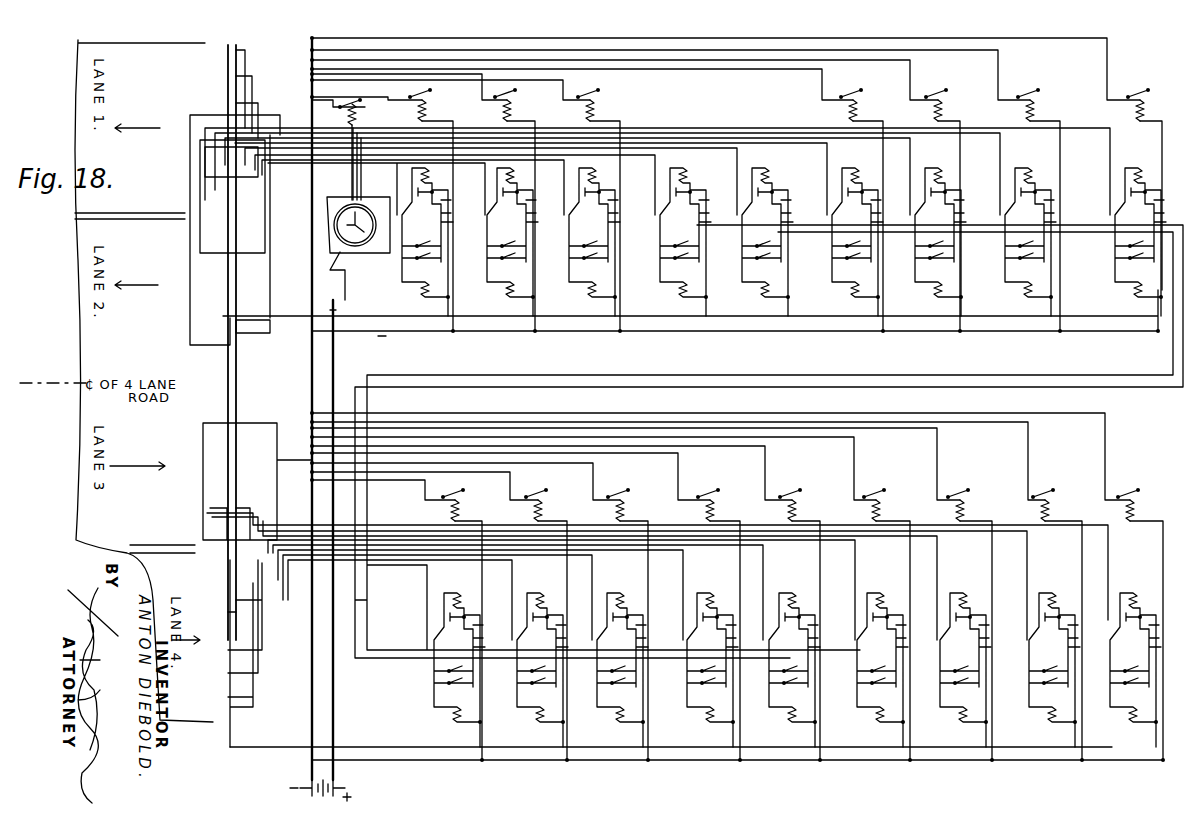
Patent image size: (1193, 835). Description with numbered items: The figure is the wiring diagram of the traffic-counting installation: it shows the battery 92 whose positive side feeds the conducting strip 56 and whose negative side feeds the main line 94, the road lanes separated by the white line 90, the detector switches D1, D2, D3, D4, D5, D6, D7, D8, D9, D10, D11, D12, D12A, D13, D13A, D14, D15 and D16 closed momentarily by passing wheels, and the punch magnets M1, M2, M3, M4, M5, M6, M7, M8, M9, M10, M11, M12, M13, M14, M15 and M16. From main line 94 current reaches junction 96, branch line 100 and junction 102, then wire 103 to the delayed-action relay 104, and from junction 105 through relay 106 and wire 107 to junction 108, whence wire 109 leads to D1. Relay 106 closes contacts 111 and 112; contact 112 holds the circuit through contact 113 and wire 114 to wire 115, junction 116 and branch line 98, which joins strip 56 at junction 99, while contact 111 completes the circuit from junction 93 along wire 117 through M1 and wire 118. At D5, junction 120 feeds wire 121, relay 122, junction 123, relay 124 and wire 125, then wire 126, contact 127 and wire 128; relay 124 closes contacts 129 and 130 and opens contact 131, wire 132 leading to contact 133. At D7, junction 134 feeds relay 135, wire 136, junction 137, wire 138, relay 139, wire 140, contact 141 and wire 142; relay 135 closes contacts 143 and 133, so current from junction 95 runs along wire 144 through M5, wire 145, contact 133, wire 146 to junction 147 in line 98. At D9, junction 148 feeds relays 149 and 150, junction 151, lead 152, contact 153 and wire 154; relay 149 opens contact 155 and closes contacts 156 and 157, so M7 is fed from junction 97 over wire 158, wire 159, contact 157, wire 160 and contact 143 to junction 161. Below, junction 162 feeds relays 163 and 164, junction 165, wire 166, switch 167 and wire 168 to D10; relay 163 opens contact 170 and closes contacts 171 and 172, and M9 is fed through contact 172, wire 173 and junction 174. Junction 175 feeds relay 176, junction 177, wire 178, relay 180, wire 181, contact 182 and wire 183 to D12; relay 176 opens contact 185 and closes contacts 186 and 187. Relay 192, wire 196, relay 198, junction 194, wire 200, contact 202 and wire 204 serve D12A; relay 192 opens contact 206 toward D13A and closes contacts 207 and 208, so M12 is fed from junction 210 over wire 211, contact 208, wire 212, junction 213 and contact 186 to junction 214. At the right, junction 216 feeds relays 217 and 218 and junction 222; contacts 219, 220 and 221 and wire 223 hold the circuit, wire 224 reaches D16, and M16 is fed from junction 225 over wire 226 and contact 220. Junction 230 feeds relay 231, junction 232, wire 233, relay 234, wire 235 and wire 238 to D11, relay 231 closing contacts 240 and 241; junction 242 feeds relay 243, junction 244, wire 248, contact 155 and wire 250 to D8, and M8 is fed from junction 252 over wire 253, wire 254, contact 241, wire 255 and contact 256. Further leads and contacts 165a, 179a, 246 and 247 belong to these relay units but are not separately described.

The conductor 97 is at (312, 43).
The conductor 95 is at (312, 62).
The conductor 93 is at (312, 97).
The conductor 117 is at (392, 116).
The conductor 144 is at (912, 60).
The conductor 158 is at (1107, 55).
The relay M1 is at (430, 209).
The relay M2 is at (423, 202).
The relay M3 is at (466, 205).
The relay M4 is at (861, 209).
The relay M5 is at (948, 209).
The relay M6 is at (1038, 209).
The relay M7 is at (1147, 189).
The relay M8 is at (440, 616).
The relay M9 is at (397, 620).
The relay M10 is at (484, 611).
The relay M11 is at (526, 606).
The relay M12 is at (569, 603).
The relay M13 is at (611, 598).
The relay M14 is at (656, 594).
The relay M15 is at (697, 591).
The relay M16 is at (739, 586).
The conductor 226 is at (640, 413).
The conductor 253 is at (515, 478).
The relay coil 104 is at (470, 233).
The conductor 128 is at (655, 260).
The relay 125 is at (730, 212).
The relay coil 122 is at (769, 168).
The conductor 140 is at (883, 200).
The relay coil 139 is at (940, 168).
The relay coil 247 is at (1030, 168).
The relay coil 150 is at (1140, 168).
The relay coil 164 is at (460, 593).
The relay coil 234 is at (548, 606).
The relay coil 180 is at (630, 593).
The relay 178 is at (680, 600).
The relay coil 198 is at (795, 593).
The relay 196 is at (813, 617).
The conductor 204 is at (860, 577).
The relay coil 218 is at (1140, 583).
The detector D1 is at (251, 48).
The detector D2 is at (258, 75).
The detector D3 is at (261, 104).
The detector D4 is at (206, 190).
The detector D5 is at (248, 188).
The detector D6 is at (206, 240).
The detector D7 is at (248, 240).
The detector D8 is at (205, 333).
The detector D9 is at (251, 345).
The detector D10 is at (262, 408).
The detector D11 is at (208, 410).
The detector D12 is at (254, 490).
The detector D13 is at (210, 494).
The detector D12A is at (262, 605).
The detector D13A is at (202, 604).
The detector D14 is at (208, 655).
The detector D15 is at (208, 678).
The detector D16 is at (208, 700).
The conductor 109 is at (296, 122).
The lane line 90 is at (155, 544).
The conductor 142 is at (958, 287).
The conductor 250 is at (1092, 128).
The conductor 154 is at (1000, 135).
The conductor 94 is at (310, 662).
The conductor 99 is at (222, 316).
The conductor 98 is at (674, 340).
The conductor 96 is at (310, 340).
The conductor 225 is at (300, 400).
The conductor 210 is at (292, 435).
The conductor 238 is at (412, 606).
The conductor 168 is at (513, 576).
The conductor 252 is at (300, 499).
The conductor 183 is at (680, 572).
The conductor 224 is at (1094, 559).
The control unit 56 is at (340, 711).
The conductor 100 is at (1146, 761).
The battery 92 is at (362, 796).
The contact 113 is at (452, 193).
The contact 118 is at (452, 210).
The contact 114 is at (452, 225).
The contact 107 is at (452, 240).
The armature 108 is at (410, 210).
The contact 111 is at (412, 258).
The contact 112 is at (412, 271).
The contact 115 is at (406, 290).
The contact 116 is at (404, 311).
The conductor 103 is at (452, 270).
The relay coil 106 is at (435, 298).
The conductor 105 is at (456, 304).
The conductor 123 is at (750, 177).
The conductor 121 is at (788, 285).
The contact 129 is at (758, 245).
The contact 132 is at (788, 238).
The contact 130 is at (788, 252).
The contact 131 is at (788, 265).
The relay coil 127 is at (674, 288).
The conductor 126 is at (732, 270).
The relay coil 124 is at (772, 292).
The conductor 102 is at (448, 334).
The conductor 146 is at (734, 328).
The conductor 147 is at (755, 328).
The conductor 120 is at (796, 334).
The contact 143 is at (877, 286).
The relay coil 141 is at (896, 292).
The conductor 137 is at (926, 176).
The conductor 145 is at (962, 152).
The contact 138 is at (958, 176).
The armature 136 is at (920, 211).
The contact 133 is at (956, 219).
The relay coil 135 is at (914, 296).
The conductor 161 is at (919, 334).
The conductor 134 is at (938, 336).
The conductor 153 is at (993, 322).
The conductor 244 is at (1009, 179).
The contact 256 is at (1016, 250).
The contact 160 is at (968, 262).
The relay coil 243 is at (1030, 292).
The conductor 248 is at (1066, 300).
The conductor 246 is at (1038, 334).
The conductor 242 is at (1058, 336).
The conductor 159 is at (1162, 135).
The conductor 179a is at (1118, 172).
The contact 151 is at (1108, 182).
The conductor 152 is at (1100, 198).
The contact 157 is at (1140, 216).
The conductor 174 is at (1162, 220).
The relay coil 156 is at (1096, 285).
The contact 155 is at (1126, 298).
The conductor 149 is at (1141, 312).
The conductor 148 is at (1160, 322).
The conductor 173 is at (370, 585).
The conductor 255 is at (408, 654).
The contact 165 is at (424, 622).
The contact 165a is at (469, 604).
The conductor 166 is at (490, 630).
The conductor 232 is at (520, 604).
The conductor 254 is at (560, 605).
The contact 177 is at (615, 626).
The conductor 213 is at (613, 645).
The contact 187 is at (642, 622).
The conductor 212 is at (746, 642).
The contact 194 is at (780, 617).
The conductor 211 is at (812, 574).
The contact 200 is at (822, 628).
The contact 208 is at (791, 665).
The contact 172 is at (434, 666).
The contact 171 is at (436, 682).
The contact 170 is at (436, 702).
The relay coil 163 is at (440, 724).
The contact 241 is at (558, 677).
The contact 240 is at (558, 692).
The contact 167 is at (558, 708).
The conductor 235 is at (499, 702).
The relay coil 231 is at (528, 720).
The conductor 233 is at (557, 735).
The relay coil 176 is at (620, 722).
The contact 186 is at (684, 698).
The contact 185 is at (666, 723).
The relay coil 181 is at (690, 722).
The conductor 182 is at (726, 712).
The relay coil 207 is at (788, 720).
The contact 206 is at (809, 709).
The relay coil 202 is at (880, 718).
The contact 221 is at (1130, 602).
The conductor 222 is at (1116, 636).
The contact 220 is at (1141, 648).
The conductor 223 is at (1156, 640).
The contact 219 is at (1120, 676).
The relay coil 217 is at (1148, 726).
The conductor 216 is at (1159, 728).
The conductor 162 is at (482, 762).
The conductor 230 is at (561, 762).
The conductor 214 is at (606, 775).
The conductor 175 is at (646, 762).
The conductor 192 is at (808, 740).